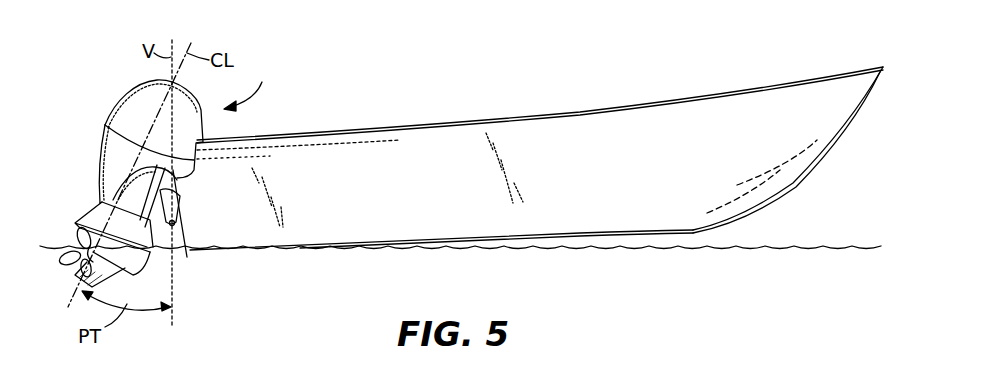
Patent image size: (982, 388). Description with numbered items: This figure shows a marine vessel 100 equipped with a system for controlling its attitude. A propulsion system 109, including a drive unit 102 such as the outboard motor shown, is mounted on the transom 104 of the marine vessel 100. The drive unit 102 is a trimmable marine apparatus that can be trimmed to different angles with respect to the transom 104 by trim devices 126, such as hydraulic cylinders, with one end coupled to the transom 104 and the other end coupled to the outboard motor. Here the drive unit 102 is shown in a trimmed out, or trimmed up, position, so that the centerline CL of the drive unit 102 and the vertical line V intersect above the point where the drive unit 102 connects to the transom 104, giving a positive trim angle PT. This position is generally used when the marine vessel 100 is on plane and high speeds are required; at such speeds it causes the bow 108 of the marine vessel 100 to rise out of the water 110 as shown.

The marine vessel 100 is at (660, 100).
The drive unit 102 is at (110, 116).
The transom 104 is at (186, 233).
The bow 108 is at (798, 183).
The propulsion system 109 is at (256, 86).
The water 110 is at (843, 249).
The trim devices 126 is at (160, 214).